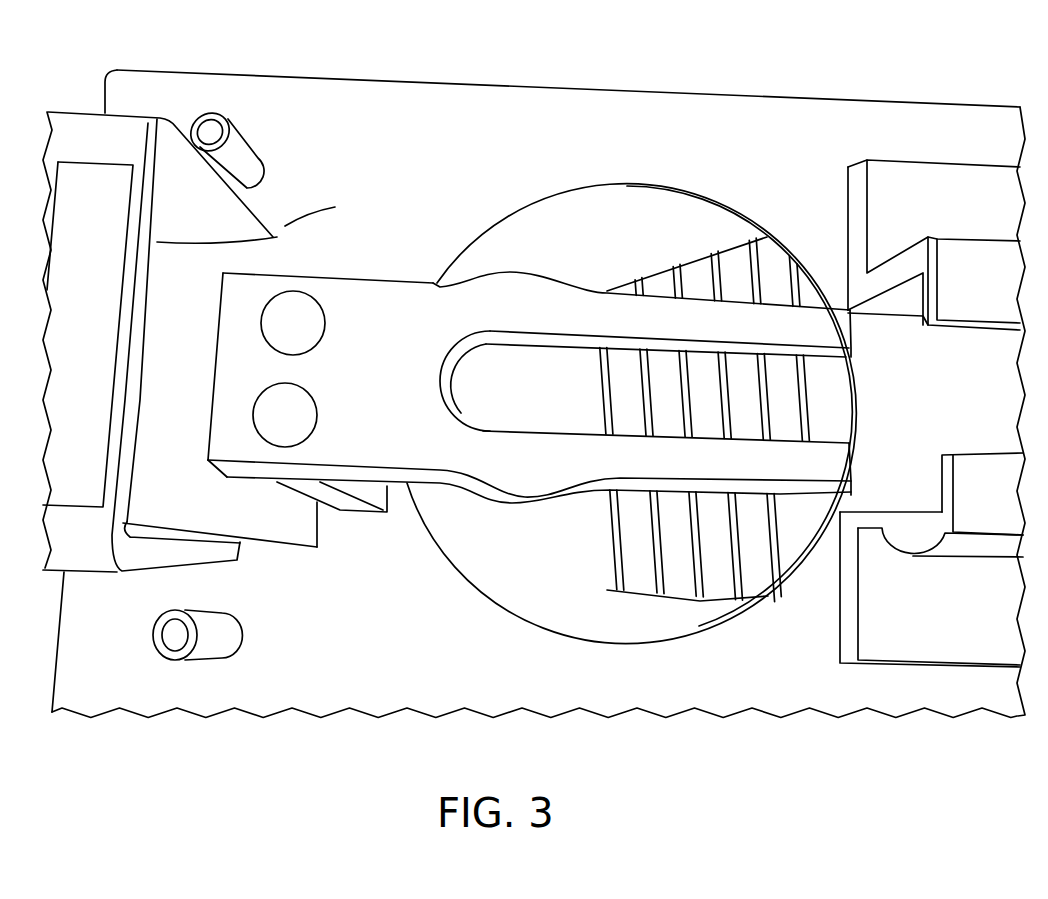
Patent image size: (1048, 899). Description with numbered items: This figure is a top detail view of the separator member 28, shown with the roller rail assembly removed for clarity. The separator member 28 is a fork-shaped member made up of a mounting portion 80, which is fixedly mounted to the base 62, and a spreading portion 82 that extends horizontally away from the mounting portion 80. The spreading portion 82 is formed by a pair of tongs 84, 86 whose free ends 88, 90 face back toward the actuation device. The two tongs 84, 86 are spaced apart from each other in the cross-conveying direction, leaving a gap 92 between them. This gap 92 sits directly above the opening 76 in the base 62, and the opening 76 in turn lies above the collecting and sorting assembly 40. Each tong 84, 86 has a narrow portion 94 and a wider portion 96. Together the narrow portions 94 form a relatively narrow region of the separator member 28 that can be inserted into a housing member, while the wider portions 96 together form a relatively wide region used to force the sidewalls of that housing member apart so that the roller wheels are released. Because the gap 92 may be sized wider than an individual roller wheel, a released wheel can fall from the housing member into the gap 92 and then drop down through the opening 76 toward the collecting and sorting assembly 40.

The base 62 is at (430, 113).
The separator member 28 is at (394, 223).
The mounting portion 80 is at (294, 268).
The opening 76 is at (713, 628).
The spreading portion 82 is at (769, 250).
The wider portion 96 is at (511, 266).
The tong 86 is at (575, 490).
The free end 88 is at (827, 323).
The gap 92 is at (811, 410).
The free end 90 is at (830, 463).
The narrow portion 94 is at (715, 306).
The tong 84 is at (662, 303).
The collecting and sorting assembly 40 is at (675, 587).